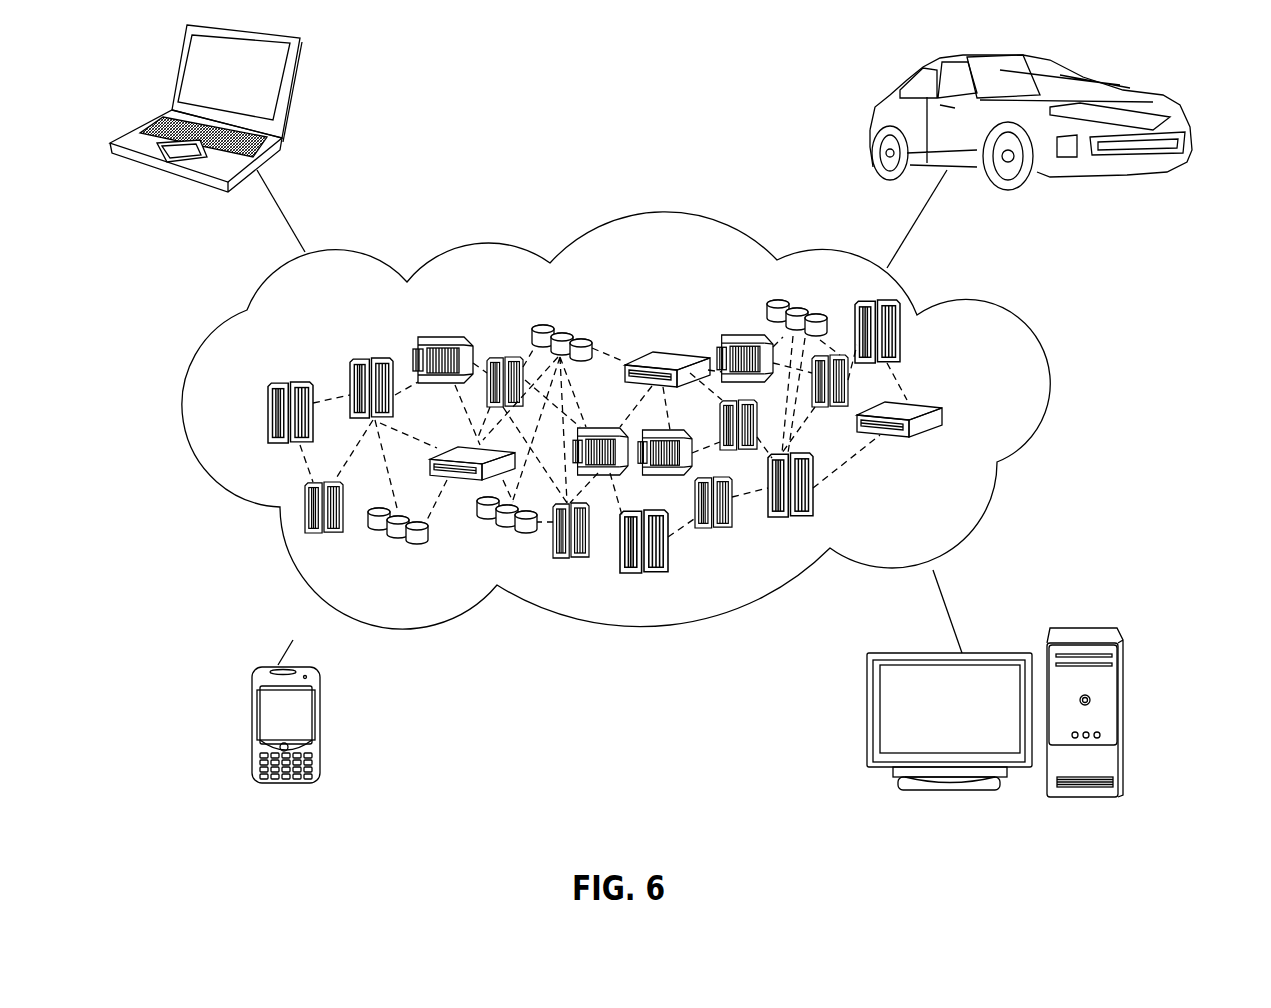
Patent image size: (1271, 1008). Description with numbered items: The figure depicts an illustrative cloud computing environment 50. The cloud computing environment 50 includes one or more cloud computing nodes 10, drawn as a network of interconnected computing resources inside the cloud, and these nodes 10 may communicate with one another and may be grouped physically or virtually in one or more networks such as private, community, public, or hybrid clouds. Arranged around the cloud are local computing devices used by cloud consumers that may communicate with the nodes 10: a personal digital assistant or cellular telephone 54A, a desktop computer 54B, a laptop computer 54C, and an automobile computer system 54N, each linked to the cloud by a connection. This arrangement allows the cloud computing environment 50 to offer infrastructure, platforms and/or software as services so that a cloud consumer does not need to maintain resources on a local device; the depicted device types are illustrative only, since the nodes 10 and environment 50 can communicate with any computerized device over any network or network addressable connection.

The cloud computing environment 50 is at (1007, 327).
The cloud computing nodes 10 is at (990, 416).
The personal digital assistant or cellular telephone 54A is at (250, 728).
The desktop computer 54B is at (1090, 627).
The laptop computer 54C is at (293, 92).
The automobile computer system 54N is at (880, 102).